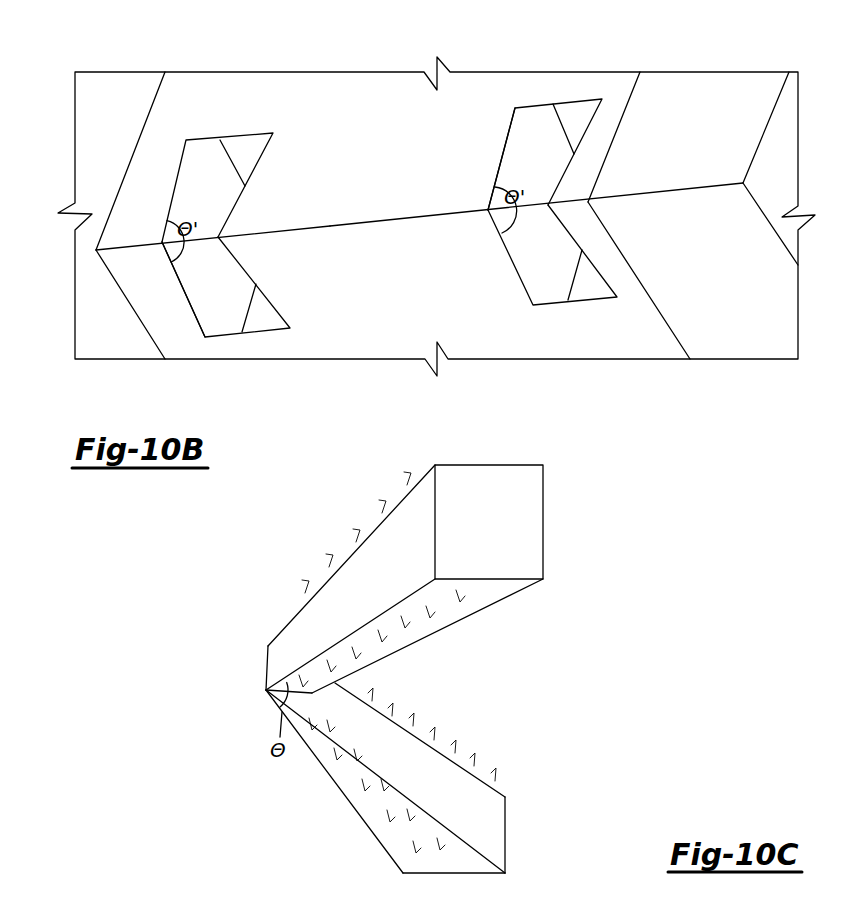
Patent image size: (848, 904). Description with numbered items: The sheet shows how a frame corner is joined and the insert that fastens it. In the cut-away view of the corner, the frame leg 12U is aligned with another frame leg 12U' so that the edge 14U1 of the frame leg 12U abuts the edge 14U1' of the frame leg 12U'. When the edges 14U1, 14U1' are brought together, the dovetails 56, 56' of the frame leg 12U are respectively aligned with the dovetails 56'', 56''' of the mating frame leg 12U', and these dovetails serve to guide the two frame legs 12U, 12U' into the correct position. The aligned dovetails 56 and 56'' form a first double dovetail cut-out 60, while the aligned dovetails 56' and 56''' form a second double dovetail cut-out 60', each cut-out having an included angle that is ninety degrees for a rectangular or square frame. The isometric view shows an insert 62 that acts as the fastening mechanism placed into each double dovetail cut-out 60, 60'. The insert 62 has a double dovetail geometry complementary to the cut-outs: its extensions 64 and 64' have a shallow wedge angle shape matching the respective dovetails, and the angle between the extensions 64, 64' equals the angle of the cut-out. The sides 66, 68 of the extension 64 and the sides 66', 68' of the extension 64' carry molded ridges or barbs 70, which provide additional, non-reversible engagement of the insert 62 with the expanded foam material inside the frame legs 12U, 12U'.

In FIG. 10B, the frame leg 12U is at (407, 271).
In FIG. 10B, the frame leg 12U' is at (401, 161).
In FIG. 10B, the edge 14U1 is at (536, 219).
In FIG. 10B, the edge 14U1' is at (230, 220).
In FIG. 10B, the dovetail 56 is at (228, 316).
In FIG. 10B, the dovetail 56' is at (558, 278).
In FIG. 10B, the dovetail 56'' is at (218, 169).
In FIG. 10B, the dovetail 56''' is at (545, 110).
In FIG. 10B, the first double dovetail cut-out 60 is at (171, 329).
In FIG. 10B, the second double dovetail cut-out 60' is at (585, 159).
In FIG. 10C, the insert 62 is at (552, 643).
In FIG. 10C, the extension 64 is at (493, 506).
In FIG. 10C, the extension 64' is at (560, 835).
In FIG. 10C, the side 66 is at (233, 660).
In FIG. 10C, the side 66' is at (434, 740).
In FIG. 10C, the side 68 is at (465, 627).
In FIG. 10C, the side 68' is at (417, 875).
In FIG. 10C, the molded ridges or barbs 70 is at (358, 532).